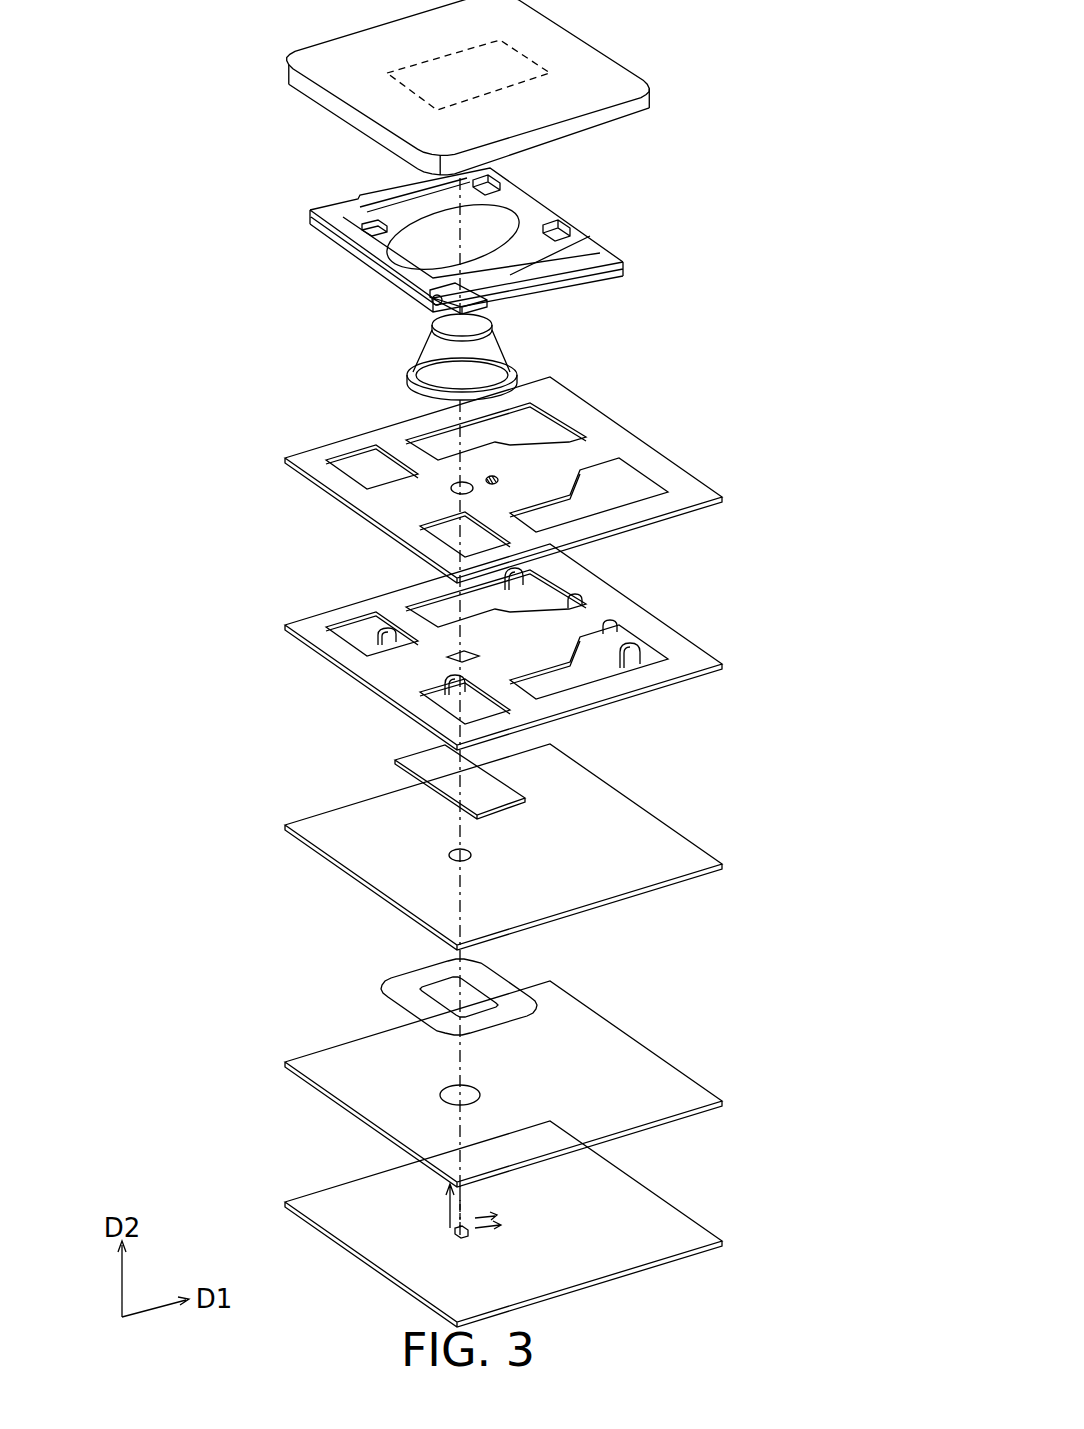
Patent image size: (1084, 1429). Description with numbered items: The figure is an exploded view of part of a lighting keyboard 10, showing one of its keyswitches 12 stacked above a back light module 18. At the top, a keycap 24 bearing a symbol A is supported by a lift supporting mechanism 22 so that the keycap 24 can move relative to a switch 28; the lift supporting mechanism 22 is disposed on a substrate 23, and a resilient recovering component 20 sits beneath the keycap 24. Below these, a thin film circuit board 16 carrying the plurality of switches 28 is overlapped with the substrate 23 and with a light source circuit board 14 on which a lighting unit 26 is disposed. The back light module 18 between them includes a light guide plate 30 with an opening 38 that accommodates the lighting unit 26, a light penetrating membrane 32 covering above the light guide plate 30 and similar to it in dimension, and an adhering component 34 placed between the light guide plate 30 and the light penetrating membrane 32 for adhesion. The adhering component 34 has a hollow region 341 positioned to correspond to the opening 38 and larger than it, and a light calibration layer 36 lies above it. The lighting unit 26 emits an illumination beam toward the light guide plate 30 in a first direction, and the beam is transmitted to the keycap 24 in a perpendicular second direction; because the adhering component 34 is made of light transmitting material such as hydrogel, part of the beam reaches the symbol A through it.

The lighting keyboard 10 is at (815, 90).
The keyswitch 12 is at (697, 2).
The light source circuit board 14 is at (678, 1222).
The thin film circuit board 16 is at (678, 483).
The back light module 18 is at (781, 424).
The resilient recovering component 20 is at (487, 355).
The lift supporting mechanism 22 is at (533, 213).
The substrate 23 is at (678, 653).
The keycap 24 is at (583, 70).
The lighting unit 26 is at (455, 1230).
The switch 28 is at (497, 478).
The light guide plate 30 is at (678, 1085).
The light penetrating membrane 32 is at (678, 852).
The adhering component 34 is at (518, 962).
The hollow region 341 is at (431, 985).
The light calibration layer 36 is at (472, 763).
The opening 38 is at (441, 1085).
The symbol A is at (407, 88).